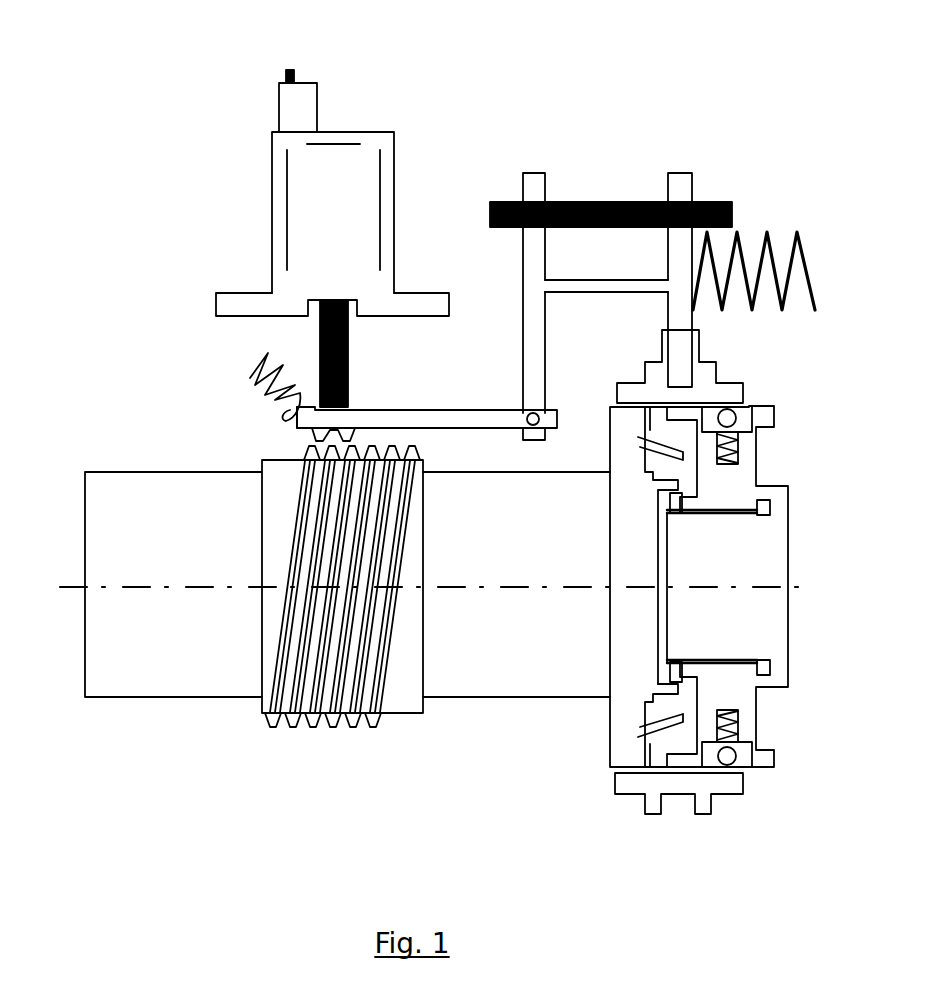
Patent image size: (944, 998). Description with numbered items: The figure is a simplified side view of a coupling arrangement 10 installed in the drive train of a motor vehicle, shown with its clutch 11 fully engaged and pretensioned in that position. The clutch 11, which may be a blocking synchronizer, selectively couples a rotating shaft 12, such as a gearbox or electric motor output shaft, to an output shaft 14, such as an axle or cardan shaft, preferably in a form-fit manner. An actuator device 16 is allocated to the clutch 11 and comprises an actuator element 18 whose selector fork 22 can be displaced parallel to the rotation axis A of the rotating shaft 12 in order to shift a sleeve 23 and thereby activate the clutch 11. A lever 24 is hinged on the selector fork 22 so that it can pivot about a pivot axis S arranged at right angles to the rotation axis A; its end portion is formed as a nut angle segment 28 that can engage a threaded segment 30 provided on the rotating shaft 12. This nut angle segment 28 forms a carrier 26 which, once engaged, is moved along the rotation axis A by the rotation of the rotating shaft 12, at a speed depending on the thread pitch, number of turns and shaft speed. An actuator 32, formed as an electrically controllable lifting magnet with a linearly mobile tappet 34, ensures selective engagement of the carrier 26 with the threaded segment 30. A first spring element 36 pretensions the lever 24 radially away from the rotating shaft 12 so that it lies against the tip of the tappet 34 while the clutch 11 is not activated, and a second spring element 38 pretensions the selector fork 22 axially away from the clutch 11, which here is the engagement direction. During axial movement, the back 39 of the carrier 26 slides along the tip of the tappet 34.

The coupling arrangement 10 is at (172, 85).
The clutch 11 is at (687, 830).
The rotating shaft 12 is at (198, 662).
The output shaft 14 is at (753, 548).
The actuator device 16 is at (473, 130).
The actuator element 18 is at (655, 178).
The selector fork 22 is at (680, 185).
The sleeve 23 is at (715, 392).
The lever 24 is at (476, 410).
The carrier 26 is at (313, 420).
The nut angle segment 28 is at (315, 433).
The threaded segment 30 is at (358, 722).
The actuator 32 is at (352, 213).
The tappet 34 is at (347, 328).
The first spring element 36 is at (226, 352).
The second spring element 38 is at (748, 250).
The back of the carrier 39 is at (352, 403).
The rotation axis A is at (73, 587).
The pivot axis S is at (535, 413).